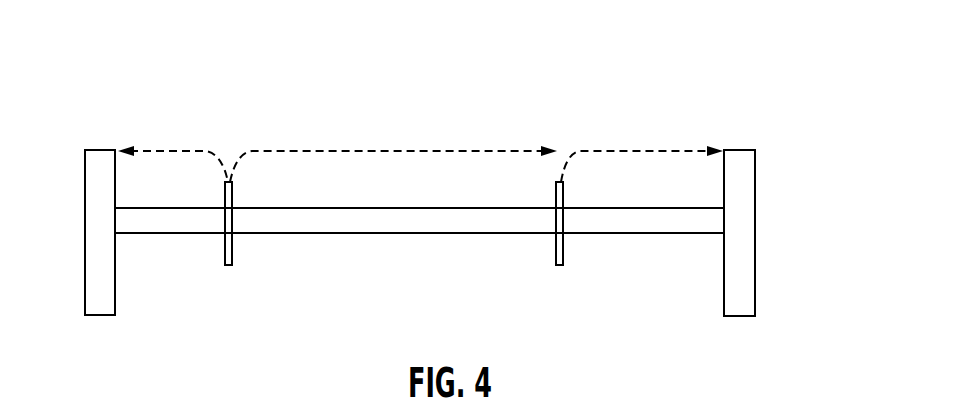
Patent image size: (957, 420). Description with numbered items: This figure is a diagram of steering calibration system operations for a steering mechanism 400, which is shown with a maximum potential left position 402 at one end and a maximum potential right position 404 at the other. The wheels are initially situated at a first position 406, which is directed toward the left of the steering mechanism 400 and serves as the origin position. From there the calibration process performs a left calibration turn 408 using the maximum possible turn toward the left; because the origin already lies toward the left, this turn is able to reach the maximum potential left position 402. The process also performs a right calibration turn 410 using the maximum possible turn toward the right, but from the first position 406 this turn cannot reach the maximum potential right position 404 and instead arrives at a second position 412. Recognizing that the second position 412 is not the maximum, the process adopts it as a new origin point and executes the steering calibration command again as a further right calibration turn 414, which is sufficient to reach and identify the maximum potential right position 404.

The steering mechanism 400 is at (788, 62).
The maximum potential left position 402 is at (101, 150).
The maximum potential right position 404 is at (738, 151).
The first position 406 is at (223, 250).
The left calibration turn 408 is at (157, 151).
The right calibration turn 410 is at (366, 150).
The second position 412 is at (556, 250).
The right calibration turn 414 is at (615, 151).